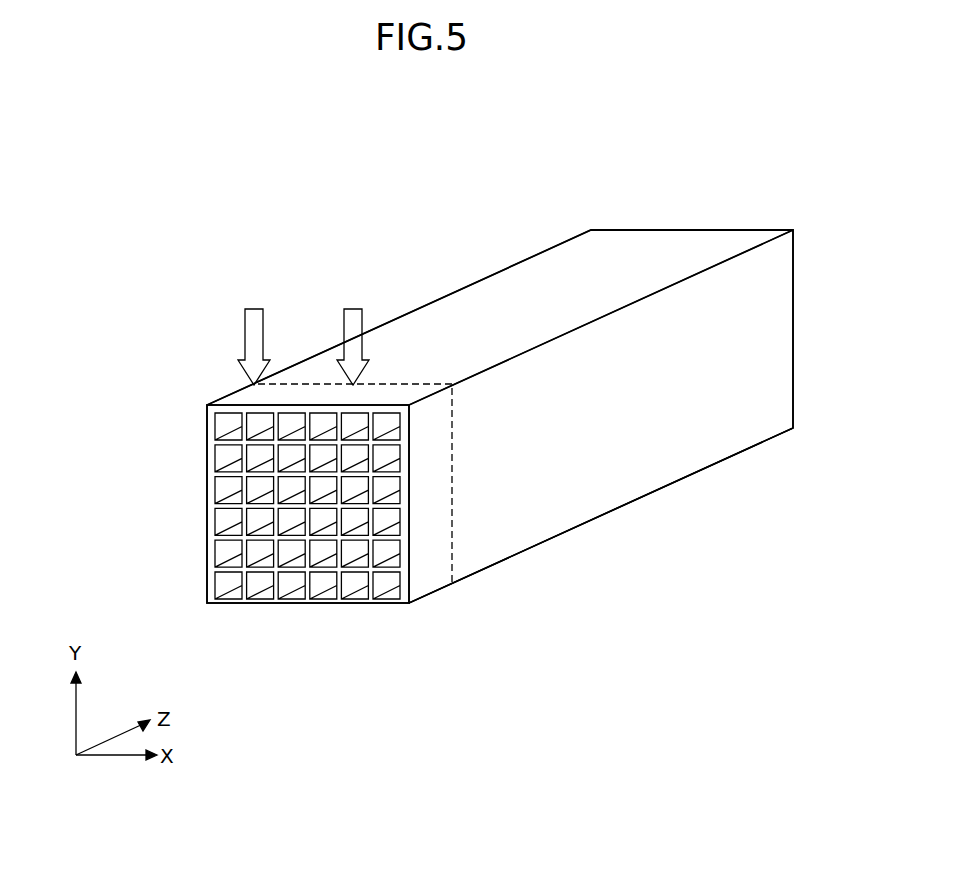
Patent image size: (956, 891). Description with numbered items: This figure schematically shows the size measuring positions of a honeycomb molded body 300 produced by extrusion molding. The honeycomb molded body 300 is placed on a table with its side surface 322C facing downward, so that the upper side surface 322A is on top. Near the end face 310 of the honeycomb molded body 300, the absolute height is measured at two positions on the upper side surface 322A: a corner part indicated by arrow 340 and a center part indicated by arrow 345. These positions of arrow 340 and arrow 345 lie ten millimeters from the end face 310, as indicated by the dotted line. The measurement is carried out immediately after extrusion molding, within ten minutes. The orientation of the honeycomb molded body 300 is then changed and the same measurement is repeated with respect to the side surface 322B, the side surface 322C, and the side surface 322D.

The honeycomb molded body 300 is at (735, 175).
The end face 310 is at (199, 590).
The upper side surface 322A is at (512, 280).
The side surface 322B is at (633, 473).
The side surface 322C is at (561, 542).
The side surface 322D is at (171, 505).
The arrow 340 is at (245, 328).
The arrow 345 is at (363, 320).